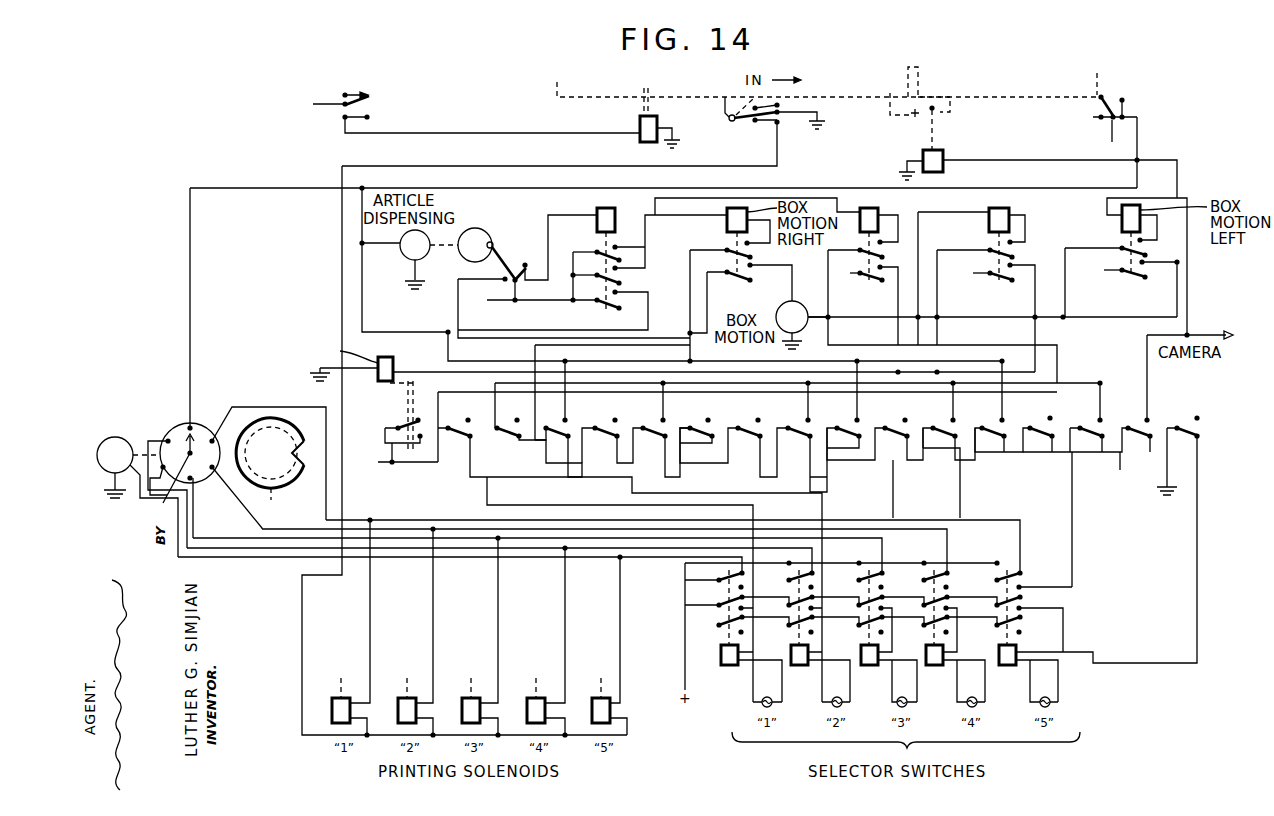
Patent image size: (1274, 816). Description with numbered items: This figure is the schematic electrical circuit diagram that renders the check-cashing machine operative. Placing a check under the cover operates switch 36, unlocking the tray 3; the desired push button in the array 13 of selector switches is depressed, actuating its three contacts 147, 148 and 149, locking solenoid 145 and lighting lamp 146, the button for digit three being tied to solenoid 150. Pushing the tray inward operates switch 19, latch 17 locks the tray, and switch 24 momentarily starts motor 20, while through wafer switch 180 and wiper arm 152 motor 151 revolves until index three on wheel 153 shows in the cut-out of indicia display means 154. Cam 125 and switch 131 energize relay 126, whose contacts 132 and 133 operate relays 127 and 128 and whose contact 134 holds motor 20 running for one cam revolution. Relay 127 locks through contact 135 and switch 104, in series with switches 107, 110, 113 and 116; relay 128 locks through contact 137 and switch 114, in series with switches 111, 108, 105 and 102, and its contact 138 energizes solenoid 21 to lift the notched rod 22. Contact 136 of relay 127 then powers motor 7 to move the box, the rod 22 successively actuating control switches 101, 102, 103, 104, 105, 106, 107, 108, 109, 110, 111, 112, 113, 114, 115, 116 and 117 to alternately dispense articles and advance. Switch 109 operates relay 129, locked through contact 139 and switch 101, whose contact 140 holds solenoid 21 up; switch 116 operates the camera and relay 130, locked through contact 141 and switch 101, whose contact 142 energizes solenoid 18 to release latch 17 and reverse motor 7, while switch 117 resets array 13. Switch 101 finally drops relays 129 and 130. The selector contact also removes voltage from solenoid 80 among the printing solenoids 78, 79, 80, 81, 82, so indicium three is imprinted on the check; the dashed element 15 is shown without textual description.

The tray 3 is at (862, 98).
The motor 7 is at (784, 306).
The array of selectively operable switches, solenoids and lights 13 is at (906, 749).
The relay 15 is at (641, 118).
The latch 17 is at (913, 120).
The solenoid 18 is at (939, 156).
The switch 19 is at (749, 121).
The motor 20 is at (404, 253).
The solenoid 21 is at (396, 367).
The notched rod 22 is at (412, 383).
The switch 24 is at (1116, 101).
The switch 36 is at (374, 105).
The printing solenoid 78 is at (592, 710).
The printing solenoid 79 is at (527, 710).
The solenoid 80 is at (462, 710).
The printing solenoid 81 is at (398, 710).
The printing solenoid 82 is at (332, 710).
The control switch 101 is at (420, 425).
The control switch 102 is at (478, 414).
The control switch 103 is at (519, 424).
The control switch 104 is at (568, 423).
The control switch 105 is at (618, 423).
The control switch 106 is at (678, 416).
The control switch 107 is at (716, 416).
The control switch 108 is at (766, 423).
The control switch 109 is at (808, 423).
The control switch 110 is at (851, 423).
The control switch 111 is at (905, 423).
The control switch 112 is at (952, 423).
The control switch 113 is at (1000, 423).
The control switch 114 is at (1048, 423).
The control switch 115 is at (1098, 423).
The control switch 116 is at (1145, 423).
The control switch 117 is at (1195, 423).
The cam 125 is at (481, 238).
The relay 126 is at (597, 212).
The relay 127 is at (727, 212).
The relay 128 is at (871, 210).
The relay 129 is at (1003, 210).
The relay 130 is at (1122, 216).
The switch 131 is at (534, 280).
The contact 132 is at (597, 249).
The contact 133 is at (621, 280).
The contact 134 is at (609, 306).
The contact 135 is at (727, 248).
The contact 136 is at (727, 271).
The contact 137 is at (886, 255).
The contact 138 is at (875, 283).
The contact 139 is at (1016, 255).
The contact 140 is at (1004, 283).
The contact 141 is at (1122, 246).
The contact 142 is at (1142, 279).
The solenoid 145 is at (726, 667).
The lamp 146 is at (762, 704).
The contact 147 is at (719, 629).
The contact 148 is at (719, 608).
The contact 149 is at (721, 585).
The solenoid 150 is at (869, 666).
The motor 151 is at (120, 437).
The wiper arm 152 is at (200, 426).
The wheel 153 is at (270, 467).
The indicia display means 154 is at (266, 419).
The wafer switch 180 is at (181, 429).